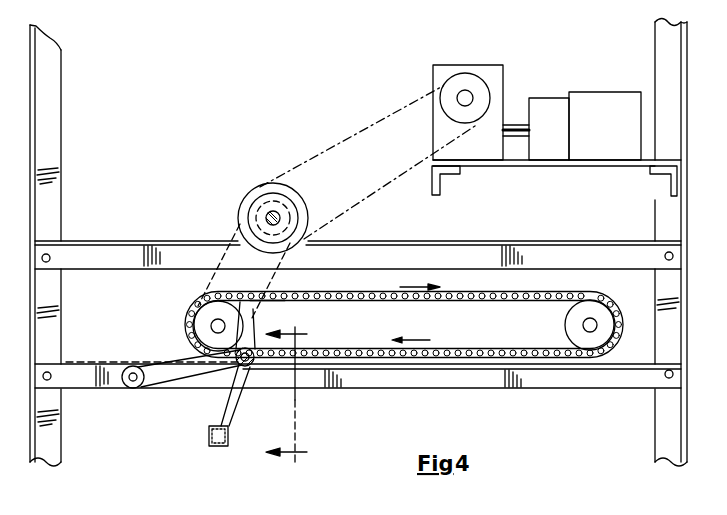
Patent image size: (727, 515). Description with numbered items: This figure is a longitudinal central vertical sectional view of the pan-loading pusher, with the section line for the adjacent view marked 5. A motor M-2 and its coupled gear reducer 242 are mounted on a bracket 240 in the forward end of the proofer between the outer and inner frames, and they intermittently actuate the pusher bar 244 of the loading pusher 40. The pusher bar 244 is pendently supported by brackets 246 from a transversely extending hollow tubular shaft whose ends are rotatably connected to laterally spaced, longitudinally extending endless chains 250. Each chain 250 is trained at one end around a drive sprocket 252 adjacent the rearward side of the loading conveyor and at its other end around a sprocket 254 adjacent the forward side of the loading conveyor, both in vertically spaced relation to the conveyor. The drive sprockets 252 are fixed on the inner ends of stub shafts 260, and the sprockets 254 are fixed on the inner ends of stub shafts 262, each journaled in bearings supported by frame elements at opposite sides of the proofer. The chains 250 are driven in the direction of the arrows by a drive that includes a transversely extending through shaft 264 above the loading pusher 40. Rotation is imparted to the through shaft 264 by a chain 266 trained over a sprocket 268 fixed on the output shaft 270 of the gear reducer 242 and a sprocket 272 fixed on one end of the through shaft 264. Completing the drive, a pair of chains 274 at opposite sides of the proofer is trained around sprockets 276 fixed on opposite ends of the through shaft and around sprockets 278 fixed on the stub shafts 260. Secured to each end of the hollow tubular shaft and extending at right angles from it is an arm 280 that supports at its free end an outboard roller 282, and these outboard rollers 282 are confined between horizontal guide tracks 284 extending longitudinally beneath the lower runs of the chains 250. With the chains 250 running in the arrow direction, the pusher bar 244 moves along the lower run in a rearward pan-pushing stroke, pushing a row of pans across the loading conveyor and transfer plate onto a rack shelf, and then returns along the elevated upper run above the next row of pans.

The motor M-2 is at (586, 92).
The bracket 240 is at (542, 166).
The gear reducer 242 is at (501, 64).
The pusher bar 244 is at (209, 435).
The brackets 246 is at (223, 406).
The endless chains 250 is at (455, 349).
The drive sprocket 252 is at (254, 311).
The sprocket 254 is at (570, 325).
The stub shafts 260 is at (212, 326).
The stub shafts 262 is at (596, 318).
The through shaft 264 is at (273, 210).
The chain 266 is at (376, 186).
The sprocket 268 is at (451, 89).
The output shaft 270 is at (465, 90).
The sprocket 272 is at (303, 212).
The chains 274 is at (208, 287).
The sprockets 276 is at (250, 218).
The sprockets 278 is at (268, 300).
The arm 280 is at (160, 384).
The outboard roller 282 is at (140, 356).
The horizontal guide tracks 284 is at (533, 389).
The loading pusher 40 is at (239, 418).
The section line 5- 5 is at (295, 397).